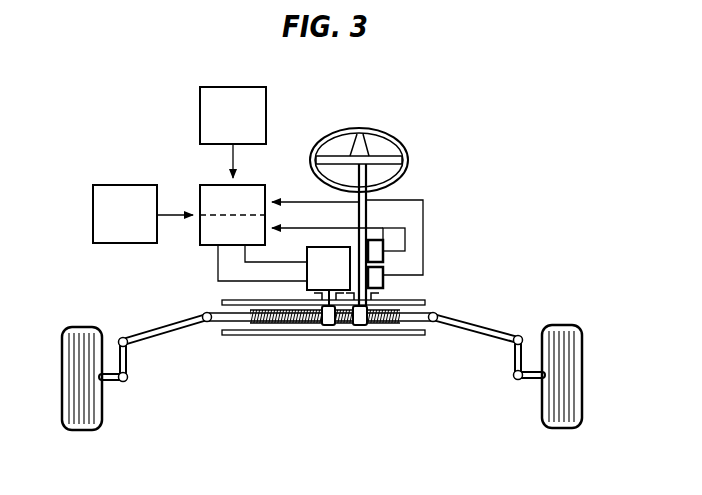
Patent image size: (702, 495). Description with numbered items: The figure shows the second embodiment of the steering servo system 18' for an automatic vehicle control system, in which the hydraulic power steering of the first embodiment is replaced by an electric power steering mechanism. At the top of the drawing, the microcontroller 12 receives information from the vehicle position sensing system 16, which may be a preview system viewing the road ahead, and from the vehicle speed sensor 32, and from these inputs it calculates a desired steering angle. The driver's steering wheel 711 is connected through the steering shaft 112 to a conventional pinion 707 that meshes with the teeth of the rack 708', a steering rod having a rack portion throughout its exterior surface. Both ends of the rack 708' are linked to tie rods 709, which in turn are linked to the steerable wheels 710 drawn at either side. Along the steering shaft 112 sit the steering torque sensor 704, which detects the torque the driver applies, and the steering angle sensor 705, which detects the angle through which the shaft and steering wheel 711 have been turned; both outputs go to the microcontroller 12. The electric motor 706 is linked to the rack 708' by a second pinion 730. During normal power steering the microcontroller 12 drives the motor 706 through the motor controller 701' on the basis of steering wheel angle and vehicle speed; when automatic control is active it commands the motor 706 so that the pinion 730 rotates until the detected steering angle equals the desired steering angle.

The vehicle position sensing system 16 is at (245, 124).
The vehicle speed sensor 32 is at (137, 226).
The microcontroller 12 is at (244, 210).
The motor controller 701' is at (232, 230).
The electric motor 706 is at (344, 278).
The steering wheel 711 is at (383, 153).
The steering shaft 112 is at (366, 193).
The steering angle sensor 705 is at (405, 240).
The steering torque sensor 704 is at (383, 273).
The tie rods 709 is at (460, 312).
The steerable wheels 710 is at (568, 325).
The steering servo system 18' is at (340, 334).
The rack 708' is at (321, 344).
The pinion 730 is at (329, 326).
The pinion 707 is at (363, 326).